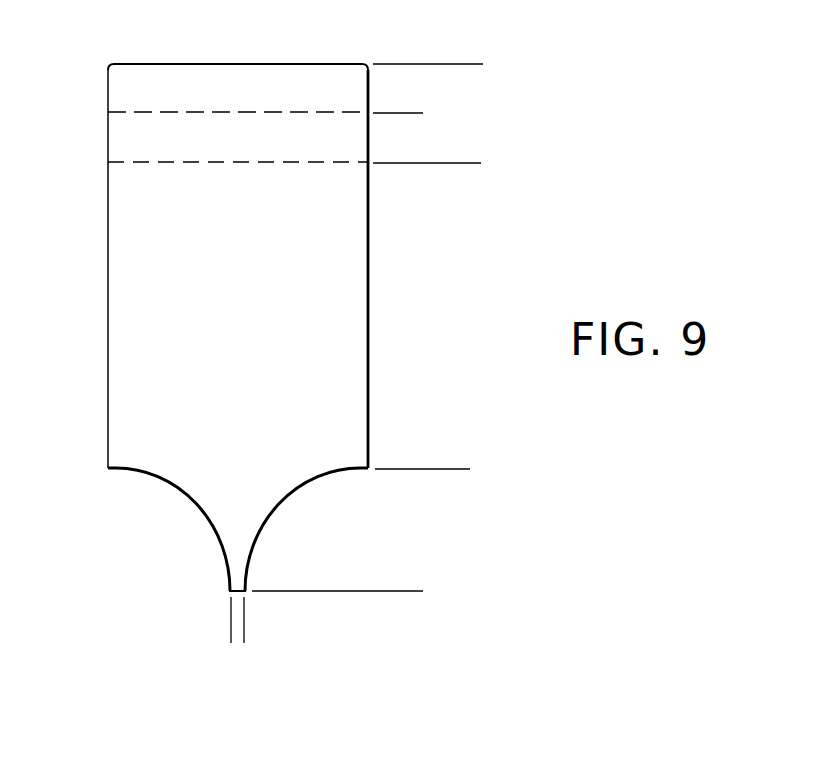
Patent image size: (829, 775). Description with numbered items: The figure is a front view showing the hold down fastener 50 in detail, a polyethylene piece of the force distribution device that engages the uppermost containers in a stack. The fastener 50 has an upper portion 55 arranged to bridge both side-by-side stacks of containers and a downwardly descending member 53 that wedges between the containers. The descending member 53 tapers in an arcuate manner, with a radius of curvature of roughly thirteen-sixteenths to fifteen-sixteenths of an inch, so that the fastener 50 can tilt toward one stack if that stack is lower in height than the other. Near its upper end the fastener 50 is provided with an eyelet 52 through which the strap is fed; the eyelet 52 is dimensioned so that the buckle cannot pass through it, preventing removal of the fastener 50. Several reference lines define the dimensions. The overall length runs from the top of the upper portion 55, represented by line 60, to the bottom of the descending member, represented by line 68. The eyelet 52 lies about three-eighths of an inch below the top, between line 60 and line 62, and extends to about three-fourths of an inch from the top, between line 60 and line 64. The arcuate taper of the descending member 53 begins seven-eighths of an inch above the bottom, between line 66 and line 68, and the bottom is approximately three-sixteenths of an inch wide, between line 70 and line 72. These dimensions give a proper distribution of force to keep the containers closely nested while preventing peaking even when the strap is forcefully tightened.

The hold down fastener 50 is at (263, 64).
The eyelet 52 is at (118, 140).
The descending member 53 is at (240, 562).
The upper portion 55 is at (355, 440).
The line representing top of upper portion 60 is at (448, 64).
The line marking top of eyelet 62 is at (412, 113).
The line marking bottom of eyelet 64 is at (450, 163).
The line marking start of taper 66 is at (428, 469).
The line representing bottom of descending member 68 is at (369, 591).
The line marking one side of bottom width 70 is at (231, 634).
The line marking other side of bottom width 72 is at (246, 631).